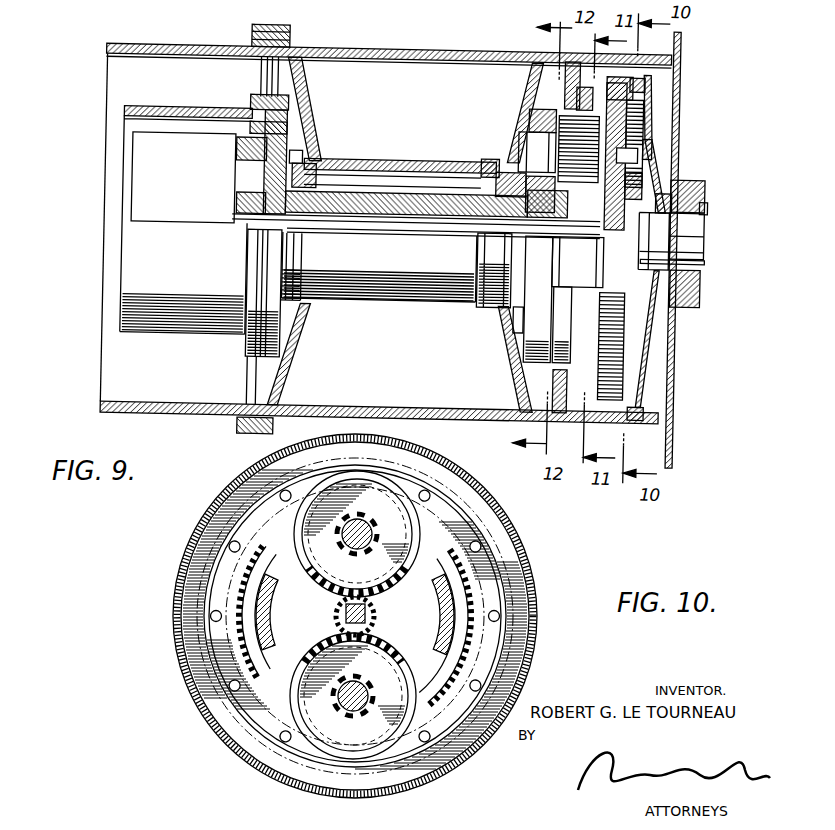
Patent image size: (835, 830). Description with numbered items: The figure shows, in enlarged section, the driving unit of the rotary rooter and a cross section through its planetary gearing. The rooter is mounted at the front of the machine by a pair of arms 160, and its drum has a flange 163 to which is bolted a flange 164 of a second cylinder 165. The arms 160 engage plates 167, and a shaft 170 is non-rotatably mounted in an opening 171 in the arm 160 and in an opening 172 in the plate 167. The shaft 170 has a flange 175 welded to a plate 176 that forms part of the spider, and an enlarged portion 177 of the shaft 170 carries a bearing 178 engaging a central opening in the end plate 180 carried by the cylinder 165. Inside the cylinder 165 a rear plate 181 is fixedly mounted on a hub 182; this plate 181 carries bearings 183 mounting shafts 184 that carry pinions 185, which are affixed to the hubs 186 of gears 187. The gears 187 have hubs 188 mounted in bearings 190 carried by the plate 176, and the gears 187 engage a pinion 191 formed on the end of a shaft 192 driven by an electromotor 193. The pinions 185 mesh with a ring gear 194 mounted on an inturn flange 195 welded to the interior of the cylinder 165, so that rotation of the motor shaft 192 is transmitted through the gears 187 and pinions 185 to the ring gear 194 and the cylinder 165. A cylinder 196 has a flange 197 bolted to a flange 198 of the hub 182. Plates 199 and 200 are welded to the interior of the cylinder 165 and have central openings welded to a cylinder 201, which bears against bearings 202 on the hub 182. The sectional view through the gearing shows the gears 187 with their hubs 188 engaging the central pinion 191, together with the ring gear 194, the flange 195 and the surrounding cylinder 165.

In FIG. 9, the arm 160 is at (701, 279).
In FIG. 9, the flange 163 is at (259, 58).
In FIG. 9, the flange 164 is at (288, 41).
In FIG. 9, the second cylinder 165 is at (417, 50).
In FIG. 10, the second cylinder 165 is at (177, 592).
In FIG. 9, the plate 167 is at (677, 111).
In FIG. 9, the shaft 170 is at (692, 223).
In FIG. 9, the opening 171 is at (707, 201).
In FIG. 9, the opening 172 is at (706, 186).
In FIG. 9, the flange 175 is at (667, 246).
In FIG. 9, the plate 176 is at (641, 358).
In FIG. 9, the enlarged portion 177 is at (669, 256).
In FIG. 9, the bearing 178 is at (674, 304).
In FIG. 9, the end plate 180 is at (654, 101).
In FIG. 9, the rear plate 181 is at (570, 216).
In FIG. 9, the hub 182 is at (377, 215).
In FIG. 9, the bearing 183 is at (531, 124).
In FIG. 9, the shaft 184 is at (535, 147).
In FIG. 9, the pinion 185 is at (569, 139).
In FIG. 9, the hub 186 is at (632, 144).
In FIG. 9, the gear 187 is at (636, 80).
In FIG. 10, the gear 187 is at (330, 630).
In FIG. 9, the hub 188 is at (650, 152).
In FIG. 10, the hub 188 is at (366, 527).
In FIG. 9, the bearing 190 is at (656, 176).
In FIG. 9, the pinion 191 is at (628, 233).
In FIG. 10, the pinion 191 is at (367, 613).
In FIG. 9, the shaft 192 is at (452, 231).
In FIG. 9, the electromotor 193 is at (184, 233).
In FIG. 9, the ring gear 194 is at (590, 113).
In FIG. 10, the ring gear 194 is at (470, 597).
In FIG. 10, the inturn flange 195 is at (523, 610).
In FIG. 9, the cylinder 196 is at (132, 115).
In FIG. 9, the flange 197 is at (245, 348).
In FIG. 9, the flange 198 is at (280, 144).
In FIG. 9, the plate 199 is at (291, 385).
In FIG. 9, the plate 200 is at (505, 318).
In FIG. 9, the cylinder 201 is at (366, 162).
In FIG. 9, the bearing 202 is at (306, 172).